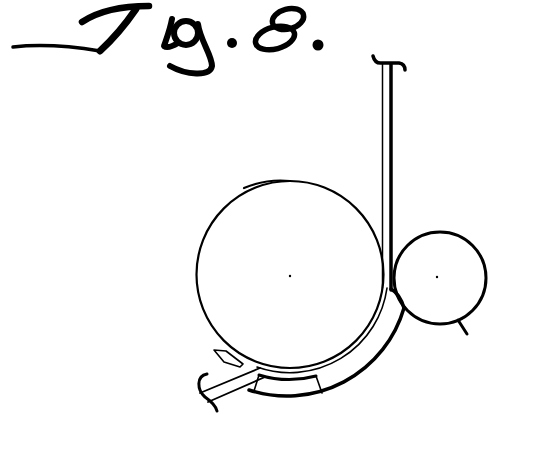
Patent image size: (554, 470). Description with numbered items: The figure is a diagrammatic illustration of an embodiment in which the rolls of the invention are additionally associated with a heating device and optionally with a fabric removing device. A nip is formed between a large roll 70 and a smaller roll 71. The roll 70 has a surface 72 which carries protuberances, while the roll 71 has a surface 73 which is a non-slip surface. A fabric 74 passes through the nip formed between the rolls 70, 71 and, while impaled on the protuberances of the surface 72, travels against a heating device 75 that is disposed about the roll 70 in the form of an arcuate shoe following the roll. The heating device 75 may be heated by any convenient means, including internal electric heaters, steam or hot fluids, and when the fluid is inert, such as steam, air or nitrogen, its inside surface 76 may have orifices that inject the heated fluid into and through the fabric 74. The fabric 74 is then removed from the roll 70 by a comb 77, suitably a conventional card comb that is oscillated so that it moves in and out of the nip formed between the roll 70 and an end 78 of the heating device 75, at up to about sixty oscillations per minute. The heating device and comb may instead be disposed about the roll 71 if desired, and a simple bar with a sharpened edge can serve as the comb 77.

The roll 70 is at (299, 200).
The roll 71 is at (462, 258).
The surface 72 is at (268, 180).
The surface 73 is at (487, 341).
The fabric 74 is at (394, 169).
The heating device 75 is at (367, 366).
The inside surface 76 is at (319, 379).
The comb 77 is at (213, 353).
The end 78 is at (277, 389).